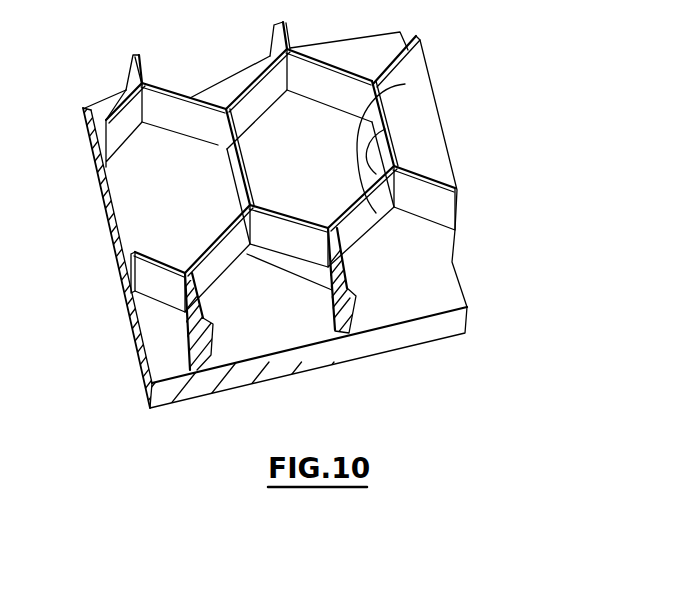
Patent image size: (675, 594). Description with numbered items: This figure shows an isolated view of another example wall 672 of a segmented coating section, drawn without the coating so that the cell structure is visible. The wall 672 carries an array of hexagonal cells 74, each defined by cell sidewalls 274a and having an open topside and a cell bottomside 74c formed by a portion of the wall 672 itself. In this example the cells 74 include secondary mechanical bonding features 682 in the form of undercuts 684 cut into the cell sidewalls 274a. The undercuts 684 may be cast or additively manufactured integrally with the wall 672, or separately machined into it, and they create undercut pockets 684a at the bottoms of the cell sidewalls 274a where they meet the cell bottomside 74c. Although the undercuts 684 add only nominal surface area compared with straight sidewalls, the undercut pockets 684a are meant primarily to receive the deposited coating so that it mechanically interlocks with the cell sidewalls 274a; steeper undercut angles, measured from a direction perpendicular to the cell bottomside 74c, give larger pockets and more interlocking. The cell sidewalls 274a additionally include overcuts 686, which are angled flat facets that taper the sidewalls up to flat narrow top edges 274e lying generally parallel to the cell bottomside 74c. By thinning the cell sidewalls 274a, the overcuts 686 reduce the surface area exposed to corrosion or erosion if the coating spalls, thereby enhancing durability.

The cells 74 is at (347, 143).
The cell bottomside 74c is at (299, 122).
The cell sidewalls 274a is at (385, 129).
The narrow top edges 274e is at (248, 203).
The wall 672 is at (137, 374).
The secondary mechanical bonding features 682 is at (330, 338).
The undercuts 684 is at (240, 130).
The undercut pockets 684a is at (209, 373).
The overcuts 686 is at (258, 222).